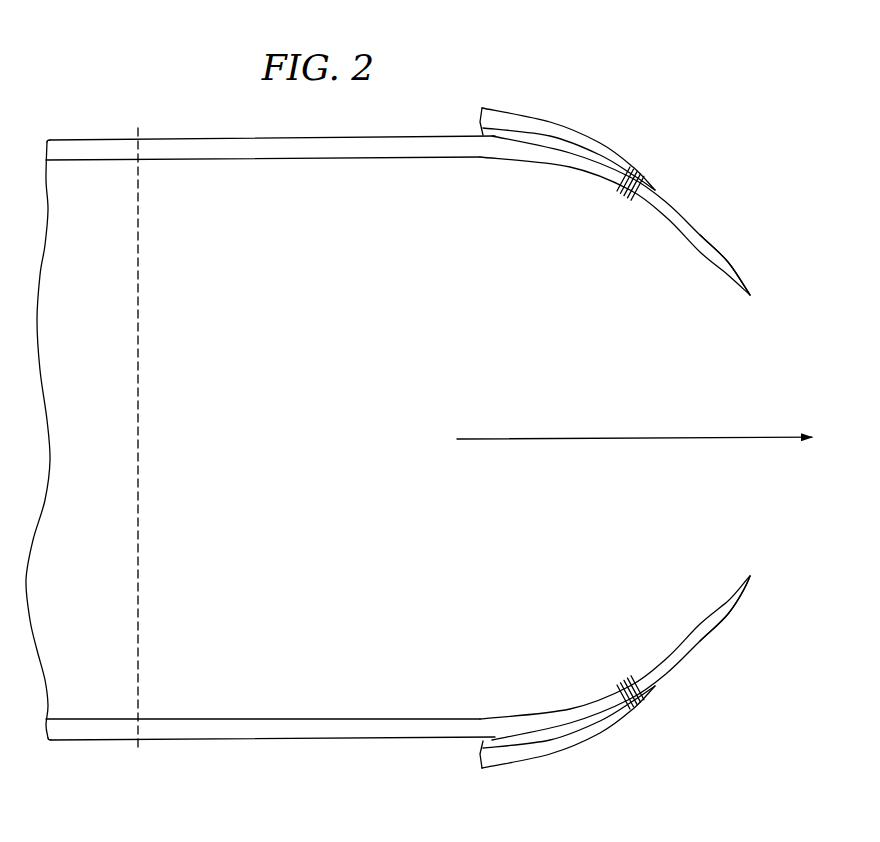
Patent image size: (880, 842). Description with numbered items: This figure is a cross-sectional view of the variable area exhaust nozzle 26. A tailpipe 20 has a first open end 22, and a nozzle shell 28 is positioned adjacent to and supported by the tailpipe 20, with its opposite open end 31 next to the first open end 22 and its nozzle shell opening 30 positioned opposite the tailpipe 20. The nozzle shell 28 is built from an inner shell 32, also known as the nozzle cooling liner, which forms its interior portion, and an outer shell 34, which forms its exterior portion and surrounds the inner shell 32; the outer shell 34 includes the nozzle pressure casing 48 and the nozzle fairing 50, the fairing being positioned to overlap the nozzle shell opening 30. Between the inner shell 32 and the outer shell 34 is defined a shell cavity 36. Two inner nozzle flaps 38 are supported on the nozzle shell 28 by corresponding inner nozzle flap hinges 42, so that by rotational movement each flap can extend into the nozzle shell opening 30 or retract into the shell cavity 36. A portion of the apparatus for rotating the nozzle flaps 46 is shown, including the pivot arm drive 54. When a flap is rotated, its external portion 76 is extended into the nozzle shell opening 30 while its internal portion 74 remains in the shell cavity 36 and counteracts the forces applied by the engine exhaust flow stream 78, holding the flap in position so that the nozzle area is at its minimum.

The tailpipe 20 is at (92, 138).
The first open end 22 is at (76, 450).
The variable area exhaust nozzle 26 is at (762, 85).
The nozzle shell 28 is at (428, 752).
The nozzle shell opening 30 is at (648, 397).
The opposite open end 31 is at (178, 450).
The inner shell 32 is at (353, 159).
The outer shell 34 is at (500, 80).
The shell cavity 36 is at (172, 145).
The inner nozzle flap 38 is at (712, 248).
The inner nozzle flap hinge 42 is at (632, 198).
The apparatus for rotating the nozzle flaps 46 is at (733, 180).
The nozzle pressure casing 48 is at (255, 137).
The nozzle fairing 50 is at (531, 110).
The pivot arm drive 54 is at (576, 140).
The internal portion 74 is at (552, 150).
The external portion 76 is at (705, 240).
The engine exhaust flow stream 78 is at (793, 435).